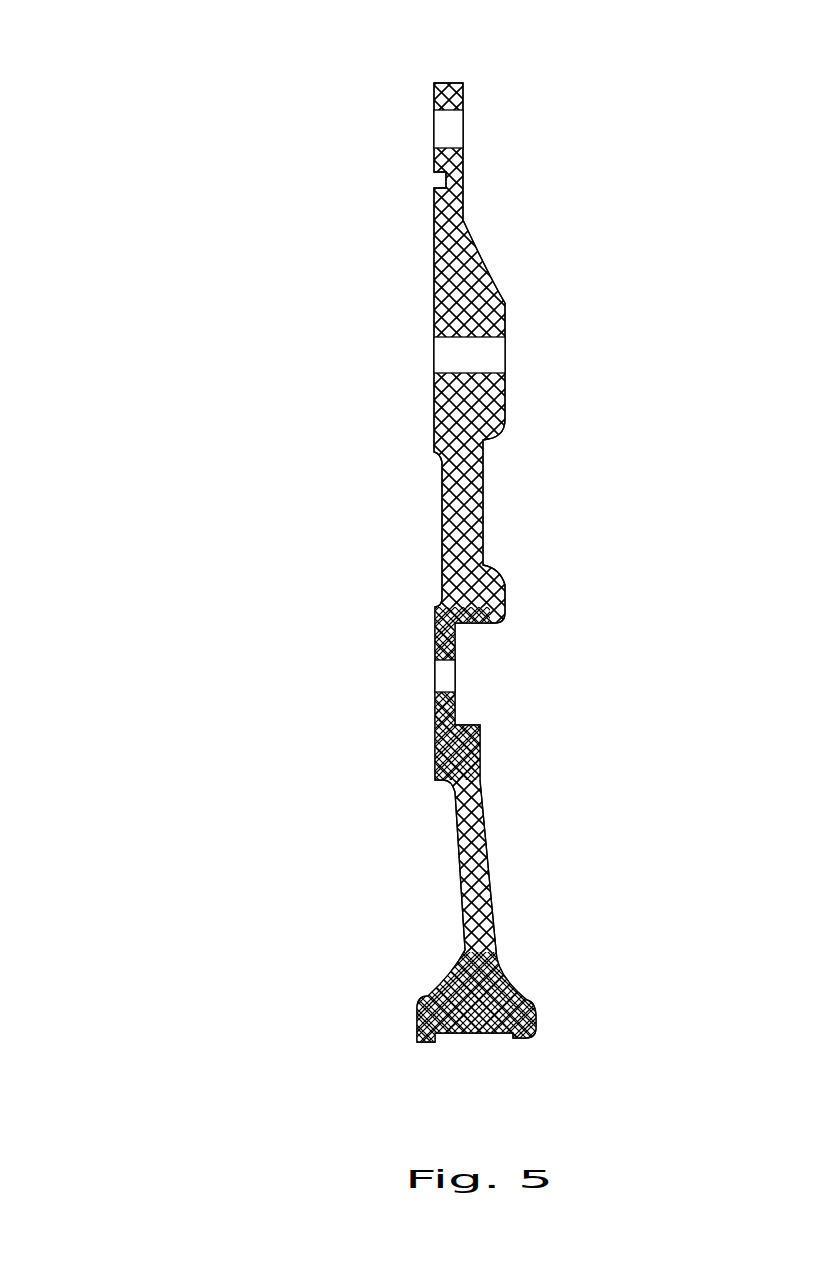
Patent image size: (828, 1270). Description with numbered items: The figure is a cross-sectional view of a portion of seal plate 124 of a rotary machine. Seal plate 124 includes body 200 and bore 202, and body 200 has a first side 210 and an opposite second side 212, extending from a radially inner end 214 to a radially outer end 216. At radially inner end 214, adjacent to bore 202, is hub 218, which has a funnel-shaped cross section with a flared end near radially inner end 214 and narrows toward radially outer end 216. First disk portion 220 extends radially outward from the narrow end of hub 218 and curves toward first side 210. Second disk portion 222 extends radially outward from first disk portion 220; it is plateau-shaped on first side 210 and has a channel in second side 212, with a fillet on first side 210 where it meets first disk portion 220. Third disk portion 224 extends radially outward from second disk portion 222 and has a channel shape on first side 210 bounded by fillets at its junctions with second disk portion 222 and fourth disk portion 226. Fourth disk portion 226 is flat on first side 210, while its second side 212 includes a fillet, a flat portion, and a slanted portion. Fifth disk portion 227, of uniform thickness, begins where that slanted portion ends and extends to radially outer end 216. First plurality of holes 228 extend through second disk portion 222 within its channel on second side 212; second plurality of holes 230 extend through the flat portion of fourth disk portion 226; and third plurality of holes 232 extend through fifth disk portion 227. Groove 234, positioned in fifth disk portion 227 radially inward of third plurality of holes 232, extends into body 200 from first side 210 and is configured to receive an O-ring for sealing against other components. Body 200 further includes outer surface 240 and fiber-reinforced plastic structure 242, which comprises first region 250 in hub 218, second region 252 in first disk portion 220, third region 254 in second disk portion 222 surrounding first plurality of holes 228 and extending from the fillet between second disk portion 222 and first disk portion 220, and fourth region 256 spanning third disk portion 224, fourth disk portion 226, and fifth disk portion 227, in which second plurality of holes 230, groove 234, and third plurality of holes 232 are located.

The seal plate 124 is at (170, 139).
The body 200 is at (470, 277).
The bore 202 is at (510, 1035).
The first side 210 is at (426, 683).
The second side 212 is at (514, 394).
The radially inner end 214 is at (426, 1052).
The radially outer end 216 is at (454, 74).
The hub 218 is at (534, 1010).
The first disk portion 220 is at (490, 845).
The second disk portion 222 is at (435, 648).
The third disk portion 224 is at (440, 487).
The fourth disk portion 226 is at (434, 300).
The fifth disk portion 227 is at (434, 97).
The first plurality of holes 228 is at (445, 676).
The second plurality of holes 230 is at (477, 355).
The third plurality of holes 232 is at (452, 128).
The groove 234 is at (440, 180).
The outer surface 240 is at (483, 795).
The fiber-reinforced plastic structure 242 is at (505, 580).
The first region 250 is at (442, 990).
The second region 252 is at (465, 875).
The third region 254 is at (435, 745).
The fourth region 256 is at (442, 508).